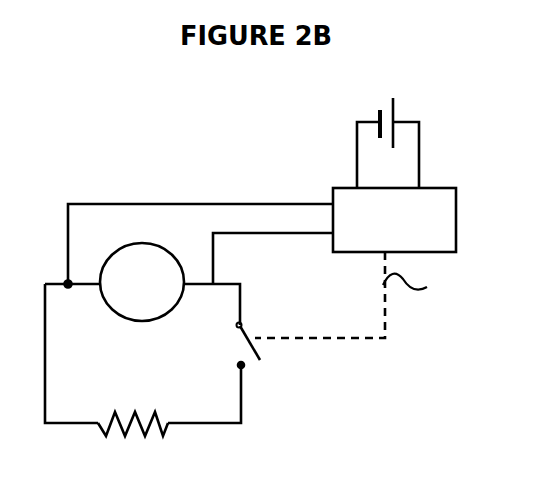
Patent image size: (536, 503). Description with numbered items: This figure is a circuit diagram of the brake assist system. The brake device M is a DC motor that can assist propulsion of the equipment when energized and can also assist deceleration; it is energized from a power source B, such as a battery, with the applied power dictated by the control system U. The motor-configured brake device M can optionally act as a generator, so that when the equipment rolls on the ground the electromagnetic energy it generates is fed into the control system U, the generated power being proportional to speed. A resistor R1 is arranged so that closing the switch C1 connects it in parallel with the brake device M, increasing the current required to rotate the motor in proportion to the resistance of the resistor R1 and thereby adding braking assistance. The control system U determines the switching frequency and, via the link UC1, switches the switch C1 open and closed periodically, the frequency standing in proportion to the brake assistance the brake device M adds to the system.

The brake device M is at (142, 282).
The control system U is at (394, 220).
The power source B is at (388, 135).
The switch C1 is at (262, 333).
The link UC1 is at (370, 295).
The resistor R1 is at (133, 445).